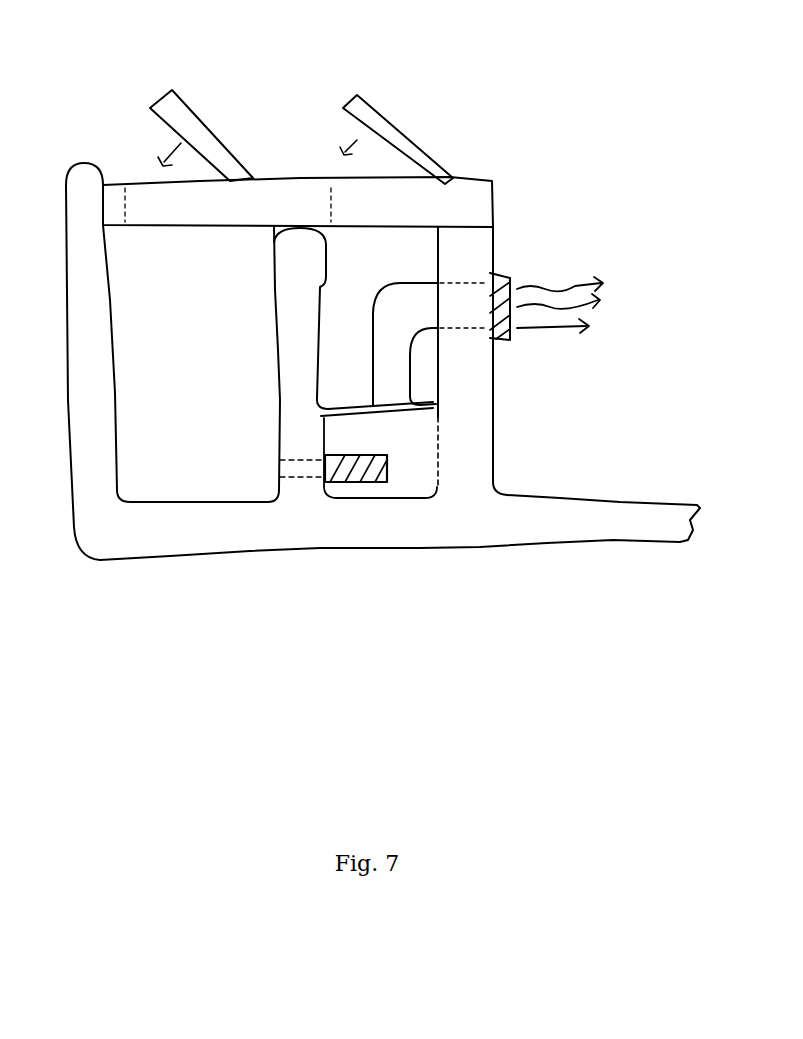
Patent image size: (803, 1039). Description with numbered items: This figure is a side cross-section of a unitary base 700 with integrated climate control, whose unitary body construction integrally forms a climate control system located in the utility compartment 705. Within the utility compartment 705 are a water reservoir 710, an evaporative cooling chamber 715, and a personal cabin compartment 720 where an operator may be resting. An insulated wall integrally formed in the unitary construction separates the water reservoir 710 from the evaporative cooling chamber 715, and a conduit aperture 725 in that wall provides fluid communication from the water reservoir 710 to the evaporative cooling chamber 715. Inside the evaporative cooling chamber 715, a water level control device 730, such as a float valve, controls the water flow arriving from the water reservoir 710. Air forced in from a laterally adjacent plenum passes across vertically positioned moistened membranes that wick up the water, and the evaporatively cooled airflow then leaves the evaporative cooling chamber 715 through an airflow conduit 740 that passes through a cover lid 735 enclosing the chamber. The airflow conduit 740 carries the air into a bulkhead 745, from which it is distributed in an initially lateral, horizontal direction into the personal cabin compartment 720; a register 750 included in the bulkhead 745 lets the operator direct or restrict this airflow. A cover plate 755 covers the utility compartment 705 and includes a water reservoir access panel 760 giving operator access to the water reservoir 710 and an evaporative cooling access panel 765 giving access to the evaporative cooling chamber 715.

The unitary base 700 is at (556, 145).
The utility compartment 705 is at (134, 562).
The water reservoir 710 is at (222, 406).
The evaporative cooling chamber 715 is at (362, 458).
The personal cabin compartment 720 is at (612, 426).
The conduit aperture 725 is at (305, 463).
The water level control device 730 is at (367, 483).
The cover lid 735 is at (341, 400).
The airflow conduit 740 is at (395, 284).
The bulkhead 745 is at (493, 373).
The register 750 is at (517, 273).
The cover plate 755 is at (477, 180).
The water reservoir access panel 760 is at (196, 102).
The evaporative cooling access panel 765 is at (368, 101).